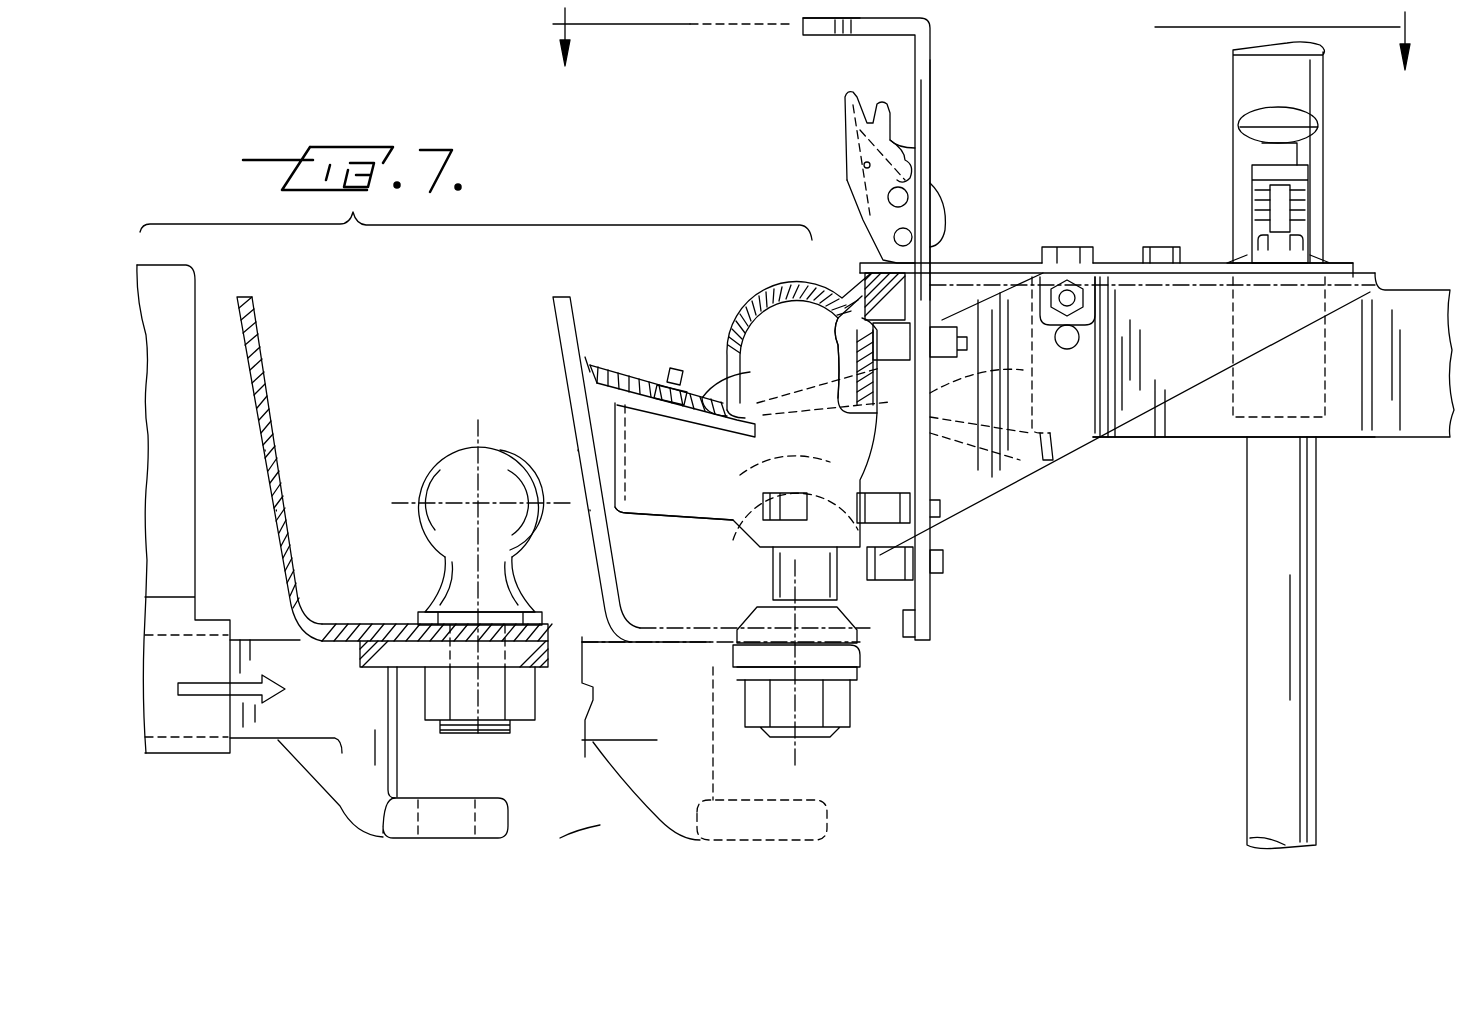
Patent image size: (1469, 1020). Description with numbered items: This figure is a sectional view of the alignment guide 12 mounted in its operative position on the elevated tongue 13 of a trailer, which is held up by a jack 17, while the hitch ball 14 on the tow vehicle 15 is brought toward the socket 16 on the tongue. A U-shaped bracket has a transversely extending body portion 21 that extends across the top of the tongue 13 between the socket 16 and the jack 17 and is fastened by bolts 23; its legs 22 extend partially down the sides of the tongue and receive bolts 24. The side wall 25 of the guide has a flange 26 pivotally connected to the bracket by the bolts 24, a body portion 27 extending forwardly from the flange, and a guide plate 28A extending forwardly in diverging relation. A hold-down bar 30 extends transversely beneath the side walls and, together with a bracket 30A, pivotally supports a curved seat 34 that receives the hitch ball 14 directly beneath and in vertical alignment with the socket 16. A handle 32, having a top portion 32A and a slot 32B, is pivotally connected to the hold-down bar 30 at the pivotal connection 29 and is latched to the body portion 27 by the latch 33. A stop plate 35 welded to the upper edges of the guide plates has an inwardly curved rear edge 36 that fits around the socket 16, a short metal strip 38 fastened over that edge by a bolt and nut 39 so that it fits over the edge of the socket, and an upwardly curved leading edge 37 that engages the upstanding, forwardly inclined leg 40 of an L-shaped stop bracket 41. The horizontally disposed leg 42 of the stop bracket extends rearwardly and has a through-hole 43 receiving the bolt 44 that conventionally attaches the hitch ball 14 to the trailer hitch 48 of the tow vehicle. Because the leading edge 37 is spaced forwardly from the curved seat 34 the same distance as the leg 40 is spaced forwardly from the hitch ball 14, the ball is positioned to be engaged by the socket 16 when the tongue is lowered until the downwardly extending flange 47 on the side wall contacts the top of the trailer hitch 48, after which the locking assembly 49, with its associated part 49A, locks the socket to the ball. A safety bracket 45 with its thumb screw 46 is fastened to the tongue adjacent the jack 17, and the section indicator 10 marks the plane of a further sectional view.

The section line 10 is at (976, 39).
The alignment guide 12 is at (1008, 520).
The tongue 13 is at (1360, 445).
The hitch ball 14 is at (455, 462).
The tow vehicle 15 is at (200, 285).
The socket 16 is at (748, 292).
The jack 17 is at (1248, 660).
The body portion 21 is at (1020, 268).
The legs 22 is at (1083, 332).
The bolts 23 is at (1068, 247).
The bolts 24 is at (1083, 297).
The side wall 25 is at (1015, 480).
The flange 26 is at (1097, 385).
The body portion 27 is at (912, 420).
The guide plate 28A is at (655, 522).
The pivotal connection 29 is at (945, 565).
The hold-down bar 30 is at (910, 525).
The bracket 30A is at (845, 455).
The handle 32 is at (933, 40).
The top portion 32A is at (830, 35).
The slot 32B is at (932, 85).
The latch 33 is at (878, 300).
The curved seat 34 is at (798, 492).
The stop plate 35 is at (628, 382).
The inwardly curved rear edge 36 is at (698, 422).
The upwardly curved leading edge 37 is at (588, 356).
The metal strip 38 is at (748, 372).
The bolt and nut 39 is at (677, 368).
The upstanding leg 40 is at (272, 395).
The L-shaped stop bracket 41 is at (270, 508).
The horizontally disposed leg 42 is at (388, 622).
The through-hole 43 is at (455, 618).
The bolt 44 is at (456, 714).
The safety bracket 45 is at (1255, 172).
The thumb screw 46 is at (1250, 118).
The flange 47 is at (780, 585).
The trailer hitch 48 is at (420, 648).
The locking assembly 49 is at (838, 133).
The latch plate 49A is at (836, 365).